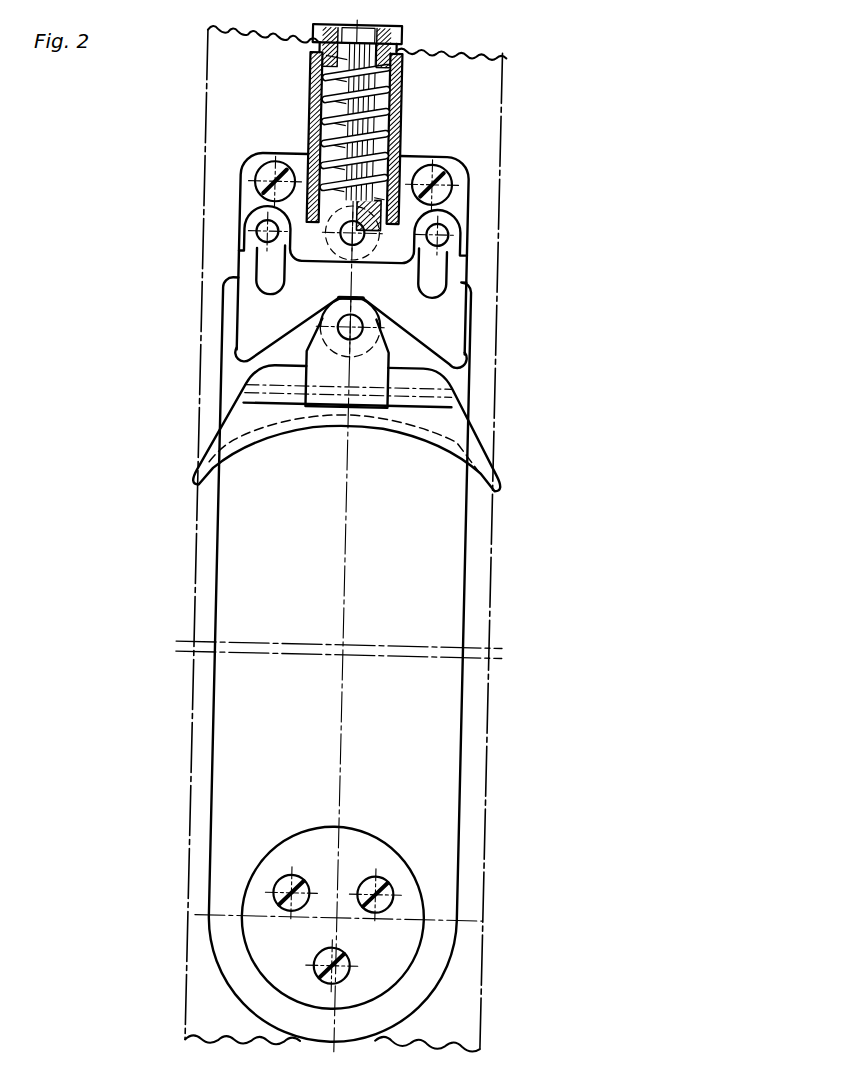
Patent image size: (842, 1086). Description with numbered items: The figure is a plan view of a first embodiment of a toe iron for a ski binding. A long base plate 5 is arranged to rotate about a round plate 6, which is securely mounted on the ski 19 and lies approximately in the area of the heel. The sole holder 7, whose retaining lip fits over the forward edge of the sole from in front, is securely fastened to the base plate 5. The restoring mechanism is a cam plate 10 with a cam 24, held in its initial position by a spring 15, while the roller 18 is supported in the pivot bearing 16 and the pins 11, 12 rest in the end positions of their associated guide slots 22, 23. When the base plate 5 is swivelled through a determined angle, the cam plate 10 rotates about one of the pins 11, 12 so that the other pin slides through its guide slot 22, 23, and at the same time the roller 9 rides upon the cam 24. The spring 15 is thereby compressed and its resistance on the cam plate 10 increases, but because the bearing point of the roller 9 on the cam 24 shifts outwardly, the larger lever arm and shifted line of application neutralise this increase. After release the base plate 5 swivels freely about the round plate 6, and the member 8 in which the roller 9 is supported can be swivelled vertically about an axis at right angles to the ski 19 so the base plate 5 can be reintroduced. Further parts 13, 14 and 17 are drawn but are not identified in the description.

The base plate 5 is at (449, 757).
The round plate 6 is at (412, 927).
The sole holder 7 is at (464, 447).
The member 8 is at (375, 375).
The roller 9 is at (369, 328).
The cam plate 10 is at (264, 300).
The pin 11 is at (256, 228).
The pin 12 is at (442, 233).
The compression spring 13 is at (398, 93).
The cap 14 is at (493, 50).
The spring 15 is at (399, 127).
The pivot bearing 16 is at (322, 235).
The screw 17 is at (288, 163).
The roller 18 is at (340, 236).
The ski 19 is at (490, 815).
The guide slot 22 is at (440, 262).
The guide slot 23 is at (268, 262).
The cam 24 is at (307, 343).